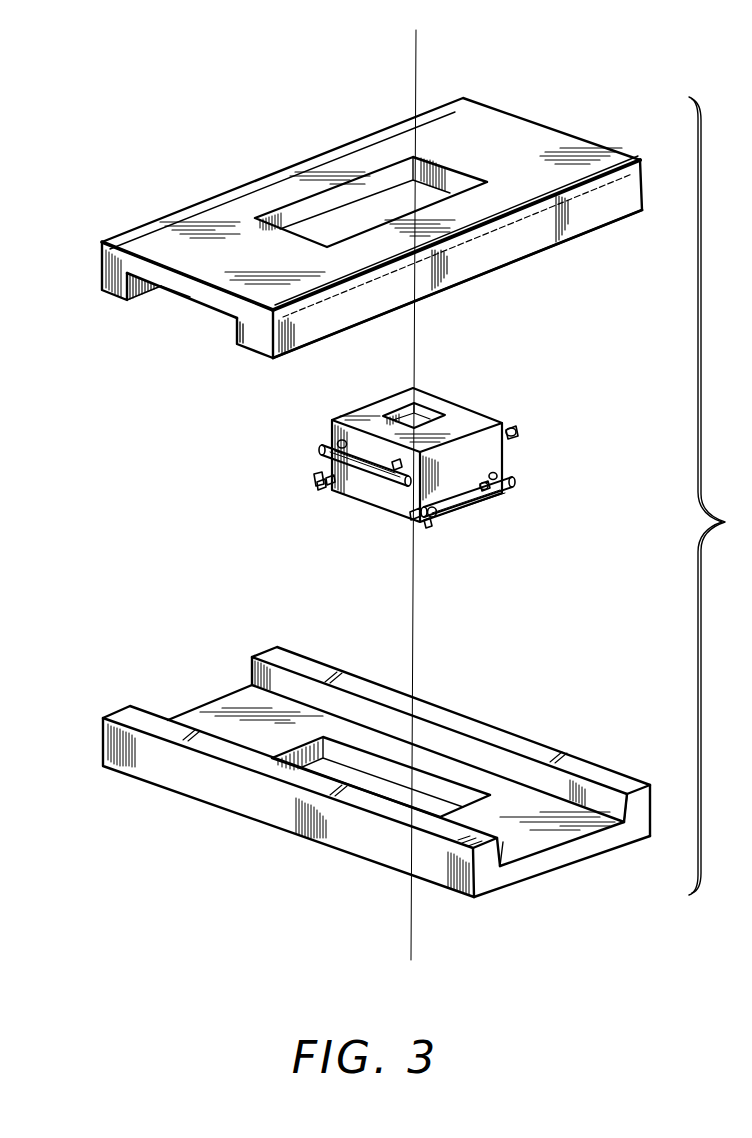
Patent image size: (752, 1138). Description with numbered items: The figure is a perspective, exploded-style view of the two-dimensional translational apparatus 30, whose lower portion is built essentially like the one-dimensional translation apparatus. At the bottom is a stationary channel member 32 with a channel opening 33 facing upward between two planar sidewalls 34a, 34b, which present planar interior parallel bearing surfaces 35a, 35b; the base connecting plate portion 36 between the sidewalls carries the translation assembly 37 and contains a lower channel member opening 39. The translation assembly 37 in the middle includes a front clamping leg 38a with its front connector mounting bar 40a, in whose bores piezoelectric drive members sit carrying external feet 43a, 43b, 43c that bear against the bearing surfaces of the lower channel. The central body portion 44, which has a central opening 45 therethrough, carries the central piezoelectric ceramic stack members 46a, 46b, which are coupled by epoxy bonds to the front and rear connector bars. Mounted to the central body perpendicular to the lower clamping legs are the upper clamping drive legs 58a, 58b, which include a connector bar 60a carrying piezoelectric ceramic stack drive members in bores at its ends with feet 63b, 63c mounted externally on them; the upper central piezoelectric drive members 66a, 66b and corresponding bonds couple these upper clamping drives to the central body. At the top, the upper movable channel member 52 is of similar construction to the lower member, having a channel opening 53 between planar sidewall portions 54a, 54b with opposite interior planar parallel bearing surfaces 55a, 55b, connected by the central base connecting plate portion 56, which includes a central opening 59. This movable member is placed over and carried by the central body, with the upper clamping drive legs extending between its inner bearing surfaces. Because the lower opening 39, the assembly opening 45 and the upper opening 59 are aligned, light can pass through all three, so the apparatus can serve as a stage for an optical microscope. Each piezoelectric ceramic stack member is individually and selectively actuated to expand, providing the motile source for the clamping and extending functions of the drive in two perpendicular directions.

The two-dimensional translational apparatus 30 is at (184, 94).
The stationary channel member 32 is at (603, 862).
The channel opening 33 is at (604, 840).
The planar sidewall 34a is at (485, 860).
The planar sidewall 34b is at (638, 800).
The planar interior parallel bearing surface 35a is at (521, 852).
The planar interior parallel bearing surface 35b is at (537, 778).
The base connecting plate portion 36 is at (560, 860).
The translation assembly 37 is at (562, 400).
The front clamping leg 38a is at (312, 480).
The lower channel member opening 39 is at (434, 806).
The front connector mounting bar 40a is at (457, 519).
The external foot 43a is at (428, 530).
The external foot 43b is at (515, 484).
The external foot 43c is at (320, 483).
The central body portion 44 is at (365, 392).
The central opening 45 is at (428, 418).
The central piezoelectric ceramic stack member 46a is at (418, 522).
The central piezoelectric ceramic stack member 46b is at (492, 473).
The upper movable channel member 52 is at (560, 123).
The channel opening 53 is at (168, 300).
The planar sidewall portion 54a is at (112, 266).
The planar sidewall portion 54b is at (242, 350).
The interior planar parallel bearing surface 55a is at (149, 280).
The interior planar parallel bearing surface 55b is at (242, 323).
The central base connecting plate portion 56 is at (186, 284).
The upper clamping drive leg 58a is at (323, 443).
The upper clamping drive leg 58b is at (518, 416).
The central opening 59 is at (330, 238).
The connector bar 60a is at (395, 462).
The foot 63b is at (520, 436).
The foot 63c is at (318, 447).
The upper central piezoelectric drive member 66a is at (328, 417).
The upper central piezoelectric drive member 66b is at (432, 424).